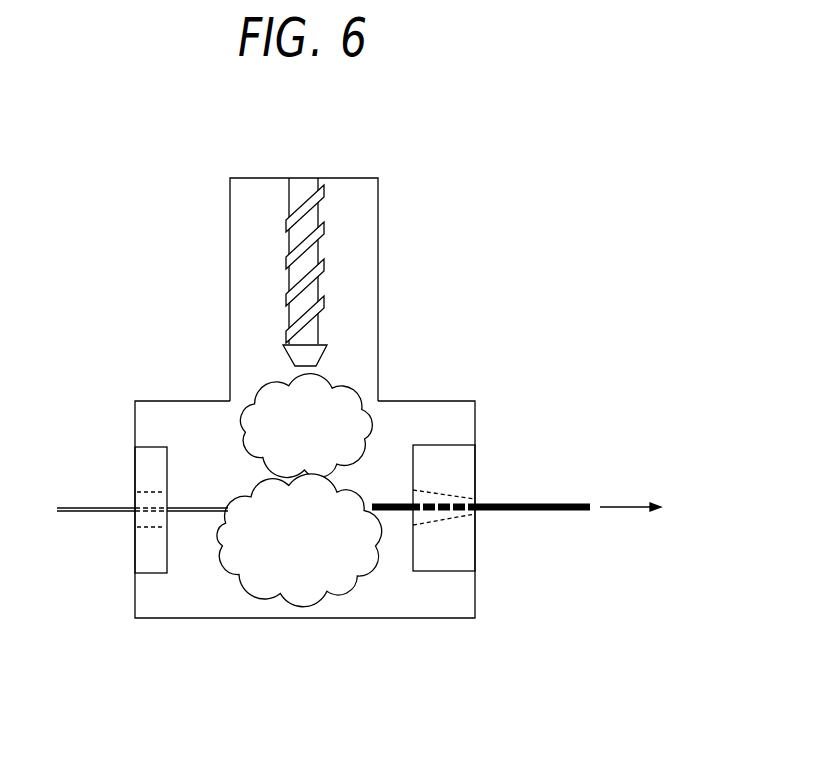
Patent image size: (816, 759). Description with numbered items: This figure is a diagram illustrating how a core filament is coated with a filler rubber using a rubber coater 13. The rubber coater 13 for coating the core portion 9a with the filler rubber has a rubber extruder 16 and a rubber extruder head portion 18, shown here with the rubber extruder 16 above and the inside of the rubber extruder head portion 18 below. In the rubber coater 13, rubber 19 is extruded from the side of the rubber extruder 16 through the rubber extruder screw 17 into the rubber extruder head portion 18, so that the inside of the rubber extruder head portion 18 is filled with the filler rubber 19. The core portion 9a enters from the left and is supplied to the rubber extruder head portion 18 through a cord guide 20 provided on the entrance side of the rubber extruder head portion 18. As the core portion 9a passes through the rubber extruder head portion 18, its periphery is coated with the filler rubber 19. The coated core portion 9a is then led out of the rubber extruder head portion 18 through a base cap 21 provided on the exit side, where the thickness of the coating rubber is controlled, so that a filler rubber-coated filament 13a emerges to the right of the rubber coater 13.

The rubber coater 13 is at (315, 415).
The rubber extruder 16 is at (378, 272).
The rubber extruder screw 17 is at (300, 192).
The rubber extruder head portion 18 is at (400, 588).
The rubber 19 is at (348, 393).
The cord guide 20 is at (143, 470).
The base cap 21 is at (453, 472).
The core portion 9a is at (95, 508).
The filler rubber-coated filament 13a is at (533, 513).